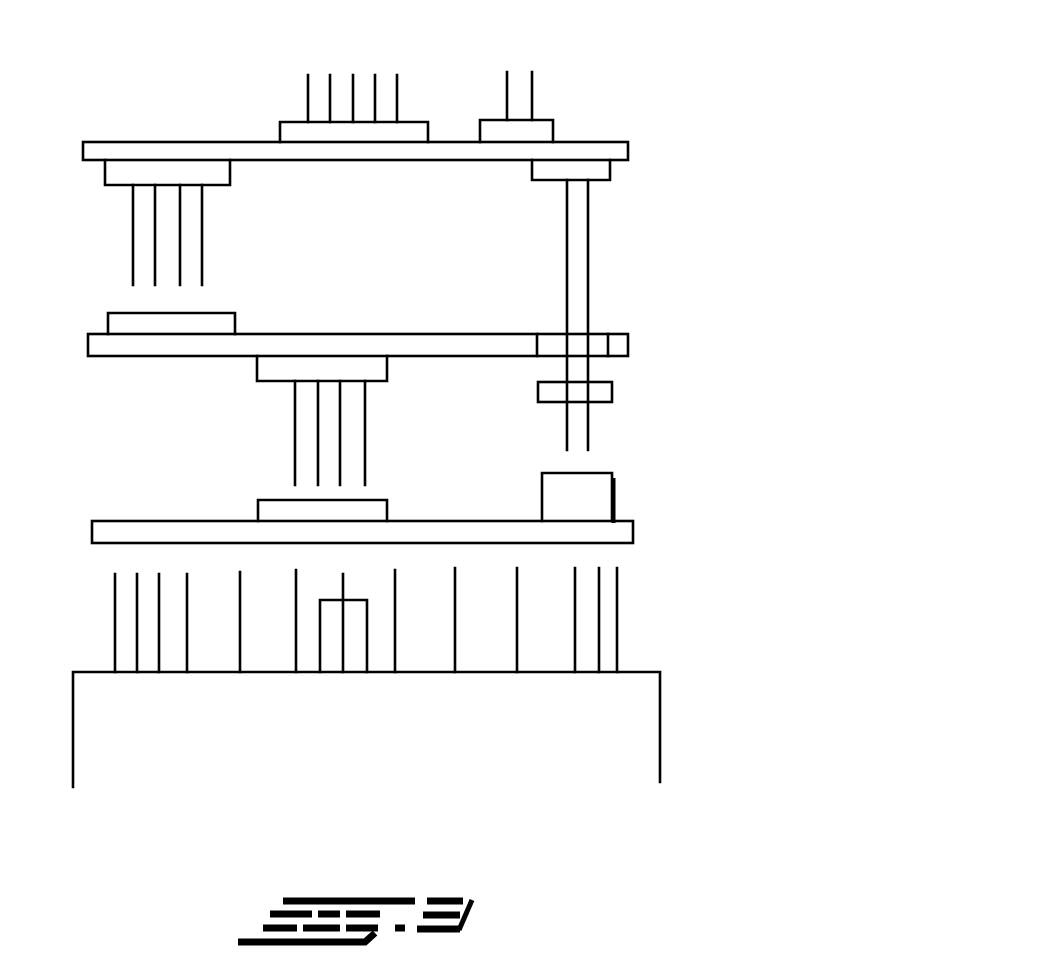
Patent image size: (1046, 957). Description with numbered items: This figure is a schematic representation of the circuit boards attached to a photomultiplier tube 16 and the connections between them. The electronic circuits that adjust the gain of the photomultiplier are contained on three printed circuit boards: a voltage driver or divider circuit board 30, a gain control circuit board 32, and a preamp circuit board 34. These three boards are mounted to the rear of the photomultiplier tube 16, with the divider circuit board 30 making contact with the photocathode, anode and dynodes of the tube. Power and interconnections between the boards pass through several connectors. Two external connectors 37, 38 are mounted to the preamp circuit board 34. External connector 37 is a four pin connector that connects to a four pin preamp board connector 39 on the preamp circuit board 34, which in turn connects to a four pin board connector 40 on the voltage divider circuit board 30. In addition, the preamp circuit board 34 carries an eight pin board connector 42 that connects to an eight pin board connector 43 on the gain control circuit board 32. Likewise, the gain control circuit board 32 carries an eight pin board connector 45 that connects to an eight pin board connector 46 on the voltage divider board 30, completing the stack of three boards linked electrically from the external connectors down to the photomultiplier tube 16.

The photomultiplier tube 16 is at (661, 760).
The voltage divider circuit board 30 is at (108, 500).
The gain control circuit board 32 is at (636, 314).
The preamp circuit board 34 is at (638, 136).
The external connector 37 is at (550, 122).
The external connector 38 is at (428, 122).
The preamp board connector 39 is at (537, 182).
The board connector 40 is at (541, 482).
The board connector 42 is at (107, 187).
The board connector 43 is at (232, 313).
The board connector 45 is at (388, 381).
The board connector 46 is at (390, 500).